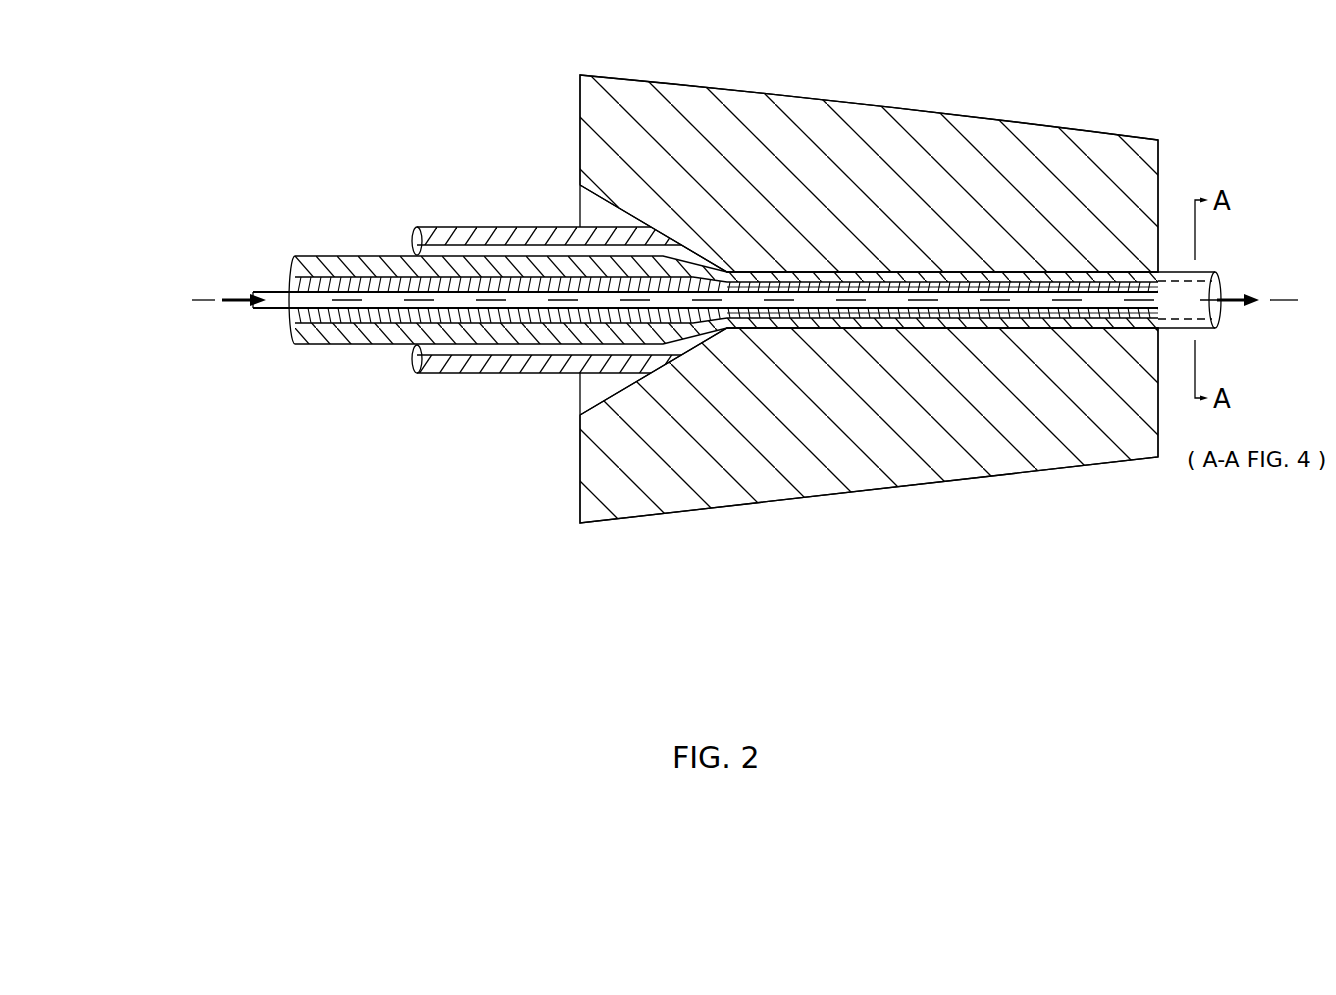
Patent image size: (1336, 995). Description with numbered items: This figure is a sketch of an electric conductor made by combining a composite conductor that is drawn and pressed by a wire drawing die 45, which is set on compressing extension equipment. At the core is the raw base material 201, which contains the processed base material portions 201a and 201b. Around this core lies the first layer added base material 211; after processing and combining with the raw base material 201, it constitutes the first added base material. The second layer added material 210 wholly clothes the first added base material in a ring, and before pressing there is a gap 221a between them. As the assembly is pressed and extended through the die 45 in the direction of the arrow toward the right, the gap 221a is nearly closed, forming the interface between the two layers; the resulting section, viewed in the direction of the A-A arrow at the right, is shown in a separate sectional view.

The wire drawing die 45 is at (977, 135).
The raw base material 201 is at (659, 463).
The processed raw base material portion 201a is at (264, 277).
The processed raw base material portion 201b is at (278, 331).
The second layer added material 210 is at (444, 215).
The first layer added base material 211 is at (324, 356).
The gap 221a is at (402, 231).